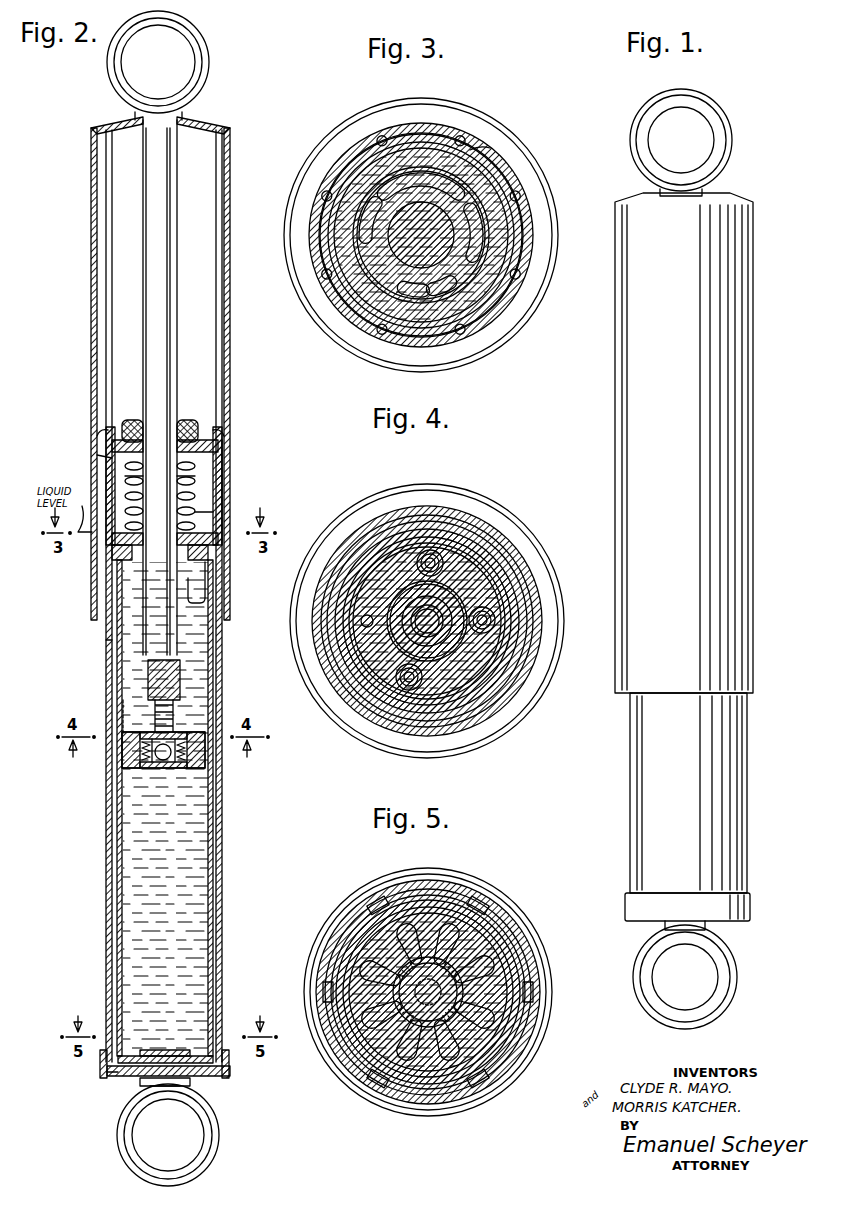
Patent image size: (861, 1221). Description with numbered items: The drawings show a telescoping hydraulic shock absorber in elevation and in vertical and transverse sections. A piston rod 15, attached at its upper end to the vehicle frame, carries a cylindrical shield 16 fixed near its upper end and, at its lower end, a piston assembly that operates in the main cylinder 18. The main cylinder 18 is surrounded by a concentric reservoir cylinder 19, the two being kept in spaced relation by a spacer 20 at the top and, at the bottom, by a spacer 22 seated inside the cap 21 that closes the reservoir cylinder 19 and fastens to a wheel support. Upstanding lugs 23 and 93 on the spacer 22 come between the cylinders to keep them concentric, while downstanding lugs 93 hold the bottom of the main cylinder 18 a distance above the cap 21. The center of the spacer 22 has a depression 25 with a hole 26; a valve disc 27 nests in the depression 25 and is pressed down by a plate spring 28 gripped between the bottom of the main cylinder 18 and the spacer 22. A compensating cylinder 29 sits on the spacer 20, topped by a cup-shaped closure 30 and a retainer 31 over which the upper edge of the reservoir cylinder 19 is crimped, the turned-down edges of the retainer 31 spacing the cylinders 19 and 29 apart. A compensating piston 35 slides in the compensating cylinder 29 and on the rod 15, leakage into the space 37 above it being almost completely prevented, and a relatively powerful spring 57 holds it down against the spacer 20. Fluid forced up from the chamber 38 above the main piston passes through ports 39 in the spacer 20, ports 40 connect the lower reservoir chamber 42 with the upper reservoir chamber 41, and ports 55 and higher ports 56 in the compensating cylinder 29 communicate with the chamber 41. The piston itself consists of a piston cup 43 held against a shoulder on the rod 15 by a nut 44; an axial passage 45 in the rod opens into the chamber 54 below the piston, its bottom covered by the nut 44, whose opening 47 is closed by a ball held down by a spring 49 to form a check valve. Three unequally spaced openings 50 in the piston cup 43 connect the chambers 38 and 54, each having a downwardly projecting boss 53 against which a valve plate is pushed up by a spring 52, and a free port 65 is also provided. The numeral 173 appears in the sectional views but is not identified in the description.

In FIG. 2, the piston rod 15 is at (163, 218).
In FIG. 3, the piston rod 15 is at (392, 238).
In FIG. 4, the piston rod 15 is at (437, 607).
In FIG. 2, the cylindrical shield 16 is at (230, 355).
In FIG. 3, the cylindrical shield 16 is at (547, 175).
In FIG. 4, the cylindrical shield 16 is at (562, 622).
In FIG. 1, the cylindrical shield 16 is at (625, 357).
In FIG. 2, the main cylinder 18 is at (210, 930).
In FIG. 4, the main cylinder 18 is at (497, 677).
In FIG. 5, the main cylinder 18 is at (497, 936).
In FIG. 2, the reservoir cylinder 19 is at (220, 882).
In FIG. 3, the reservoir cylinder 19 is at (533, 208).
In FIG. 4, the reservoir cylinder 19 is at (537, 602).
In FIG. 5, the reservoir cylinder 19 is at (510, 917).
In FIG. 1, the reservoir cylinder 19 is at (650, 758).
In FIG. 2, the spacer 20 is at (203, 575).
In FIG. 3, the spacer 20 is at (477, 148).
In FIG. 2, the cap 21 is at (230, 1070).
In FIG. 1, the cap 21 is at (747, 907).
In FIG. 2, the spacer 22 is at (207, 1073).
In FIG. 5, the upstanding lugs 23 is at (380, 912).
In FIG. 5, the depression 25 is at (458, 980).
In FIG. 2, the hole 26 is at (168, 1078).
In FIG. 5, the hole 26 is at (406, 993).
In FIG. 2, the valve disc 27 is at (163, 1068).
In FIG. 5, the valve disc 27 is at (450, 972).
In FIG. 2, the plate spring 28 is at (135, 1053).
In FIG. 5, the plate spring 28 is at (467, 1033).
In FIG. 2, the compensating cylinder 29 is at (232, 470).
In FIG. 3, the compensating cylinder 29 is at (520, 250).
In FIG. 2, the cup-shaped closure 30 is at (233, 447).
In FIG. 2, the retainer 31 is at (192, 416).
In FIG. 2, the compensating piston 35 is at (218, 500).
In FIG. 2, the space 37 is at (125, 470).
In FIG. 2, the chamber 38 is at (195, 653).
In FIG. 2, the ports 39 is at (200, 598).
In FIG. 3, the ports 39 is at (463, 274).
In FIG. 2, the ports 40 is at (160, 552).
In FIG. 3, the ports 40 is at (502, 157).
In FIG. 2, the upper reservoir chamber 41 is at (97, 458).
In FIG. 2, the lower reservoir chamber 42 is at (107, 637).
In FIG. 2, the piston cup 43 is at (200, 735).
In FIG. 4, the piston cup 43 is at (402, 567).
In FIG. 2, the nut 44 is at (143, 768).
In FIG. 4, the nut 44 is at (392, 618).
In FIG. 2, the axial passage 45 is at (182, 717).
In FIG. 2, the opening 47 is at (187, 770).
In FIG. 4, the spring 49 is at (405, 628).
In FIG. 4, the openings 50 is at (440, 552).
In FIG. 2, the spring 52 is at (133, 755).
In FIG. 4, the boss 53 is at (492, 631).
In FIG. 2, the chamber 54 is at (192, 973).
In FIG. 2, the ports 55 is at (127, 478).
In FIG. 2, the ports 56 is at (97, 445).
In FIG. 2, the spring 57 is at (213, 513).
In FIG. 4, the free opening or port 65 is at (361, 621).
In FIG. 2, the lugs 93 is at (118, 1073).
In FIG. 5, the lugs 93 is at (327, 993).
In FIG. 2, the passage 173 is at (125, 732).
In FIG. 4, the passage 173 is at (362, 562).